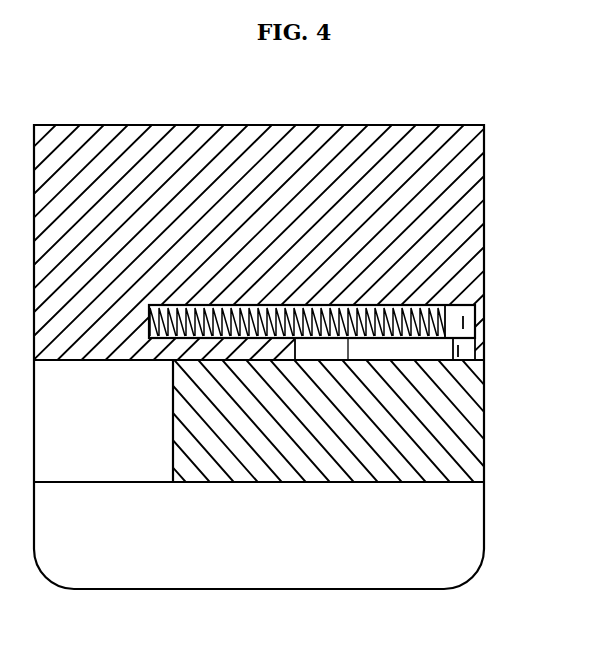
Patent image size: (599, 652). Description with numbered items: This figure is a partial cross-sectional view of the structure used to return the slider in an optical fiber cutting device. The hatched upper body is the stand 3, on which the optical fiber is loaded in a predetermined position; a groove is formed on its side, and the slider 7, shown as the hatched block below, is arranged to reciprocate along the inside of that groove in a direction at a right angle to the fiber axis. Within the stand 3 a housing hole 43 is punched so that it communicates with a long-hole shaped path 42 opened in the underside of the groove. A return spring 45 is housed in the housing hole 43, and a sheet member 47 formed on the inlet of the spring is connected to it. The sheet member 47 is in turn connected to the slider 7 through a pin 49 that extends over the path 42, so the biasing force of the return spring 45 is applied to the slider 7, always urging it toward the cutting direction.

The stand 3 is at (478, 150).
The slider 7 is at (466, 403).
The path 42 is at (348, 360).
The housing hole 43 is at (412, 306).
The return spring 45 is at (326, 306).
The sheet member 47 is at (458, 322).
The pin 49 is at (458, 352).